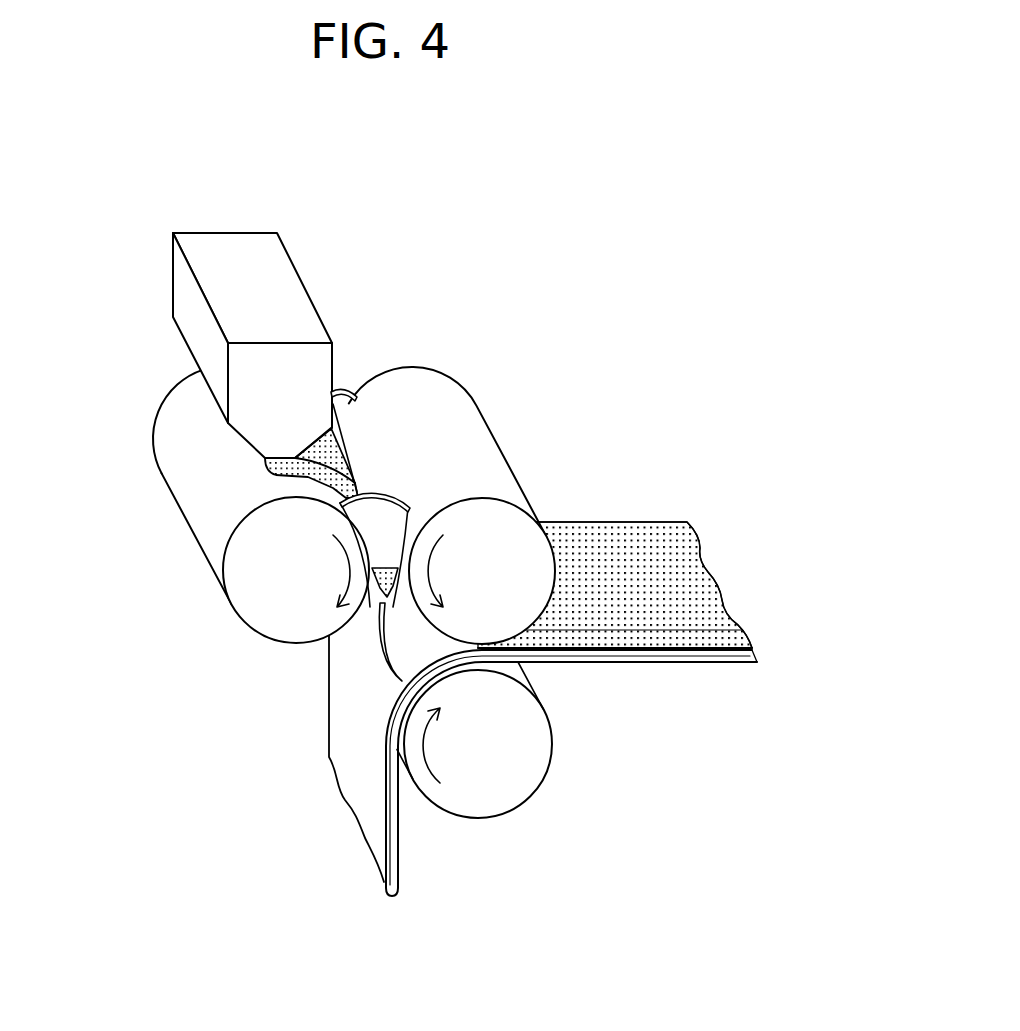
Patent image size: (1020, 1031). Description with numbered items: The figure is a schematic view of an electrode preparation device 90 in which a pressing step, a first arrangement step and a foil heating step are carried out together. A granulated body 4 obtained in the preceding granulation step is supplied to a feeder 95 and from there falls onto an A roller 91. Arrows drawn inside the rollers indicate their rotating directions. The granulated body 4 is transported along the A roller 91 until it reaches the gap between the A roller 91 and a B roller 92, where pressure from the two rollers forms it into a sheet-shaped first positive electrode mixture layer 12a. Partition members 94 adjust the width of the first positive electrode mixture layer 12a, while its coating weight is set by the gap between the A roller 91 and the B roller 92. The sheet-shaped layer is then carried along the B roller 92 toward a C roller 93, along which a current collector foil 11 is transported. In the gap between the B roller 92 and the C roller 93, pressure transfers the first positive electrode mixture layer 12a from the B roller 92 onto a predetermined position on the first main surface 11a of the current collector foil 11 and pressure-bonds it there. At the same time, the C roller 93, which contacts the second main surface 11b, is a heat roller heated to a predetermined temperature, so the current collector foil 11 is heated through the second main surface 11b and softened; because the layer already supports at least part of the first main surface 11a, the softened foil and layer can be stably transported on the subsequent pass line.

The electrode preparation device 90 is at (115, 254).
The feeder 95 is at (233, 243).
The partition members 94 is at (342, 402).
The B roller 92 is at (440, 383).
The A roller 91 is at (172, 405).
The granulated body 4 is at (265, 461).
The first positive electrode mixture layer 12a is at (640, 530).
The C roller 93 is at (535, 777).
The current collector foil 11 is at (543, 811).
The first main surface 11a is at (360, 792).
The second main surface 11b is at (400, 800).